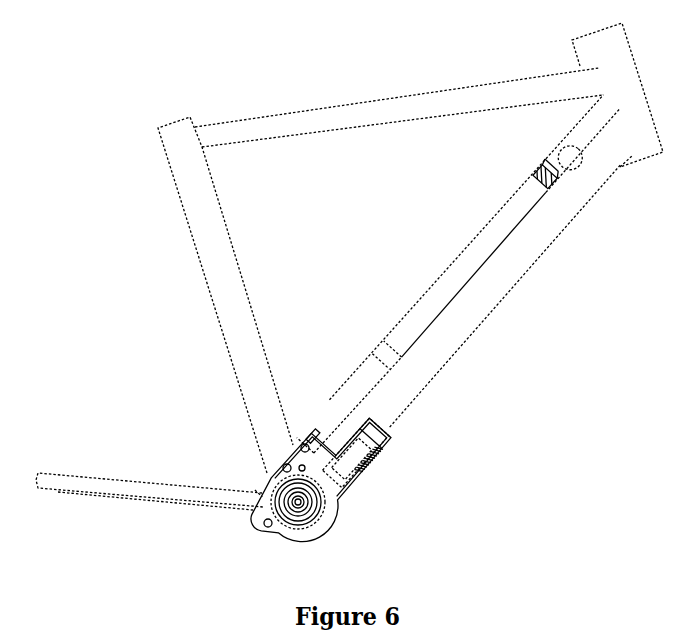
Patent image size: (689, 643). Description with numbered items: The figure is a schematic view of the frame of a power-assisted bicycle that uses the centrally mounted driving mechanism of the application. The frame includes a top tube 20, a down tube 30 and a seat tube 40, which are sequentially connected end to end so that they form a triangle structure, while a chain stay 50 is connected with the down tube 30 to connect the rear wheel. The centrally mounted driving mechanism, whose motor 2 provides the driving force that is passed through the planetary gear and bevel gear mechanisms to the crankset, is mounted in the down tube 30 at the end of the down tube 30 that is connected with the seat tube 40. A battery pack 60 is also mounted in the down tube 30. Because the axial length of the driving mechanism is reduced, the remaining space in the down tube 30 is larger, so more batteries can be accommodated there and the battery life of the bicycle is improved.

The motor 2 is at (320, 478).
The top tube 20 is at (318, 120).
The down tube 30 is at (535, 247).
The seat tube 40 is at (223, 313).
The chain stay 50 is at (185, 495).
The battery pack 60 is at (460, 263).